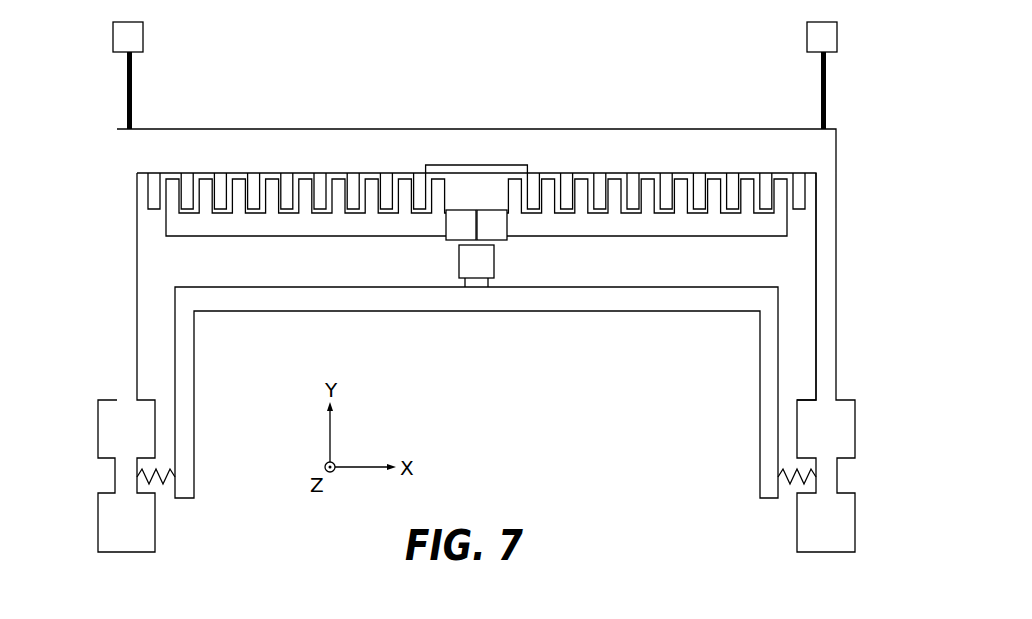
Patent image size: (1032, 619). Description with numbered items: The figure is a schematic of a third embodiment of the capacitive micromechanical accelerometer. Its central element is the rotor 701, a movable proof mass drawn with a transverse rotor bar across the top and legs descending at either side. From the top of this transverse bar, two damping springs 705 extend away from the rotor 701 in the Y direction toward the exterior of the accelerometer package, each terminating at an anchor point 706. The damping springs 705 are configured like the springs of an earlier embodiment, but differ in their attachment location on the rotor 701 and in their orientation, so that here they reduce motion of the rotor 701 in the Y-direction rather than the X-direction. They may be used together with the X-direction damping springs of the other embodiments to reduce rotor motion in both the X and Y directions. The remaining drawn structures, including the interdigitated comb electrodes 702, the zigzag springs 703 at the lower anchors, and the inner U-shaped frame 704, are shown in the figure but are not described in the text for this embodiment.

The rotor 701 is at (525, 128).
The fixed comb electrode 702 is at (170, 237).
The spring 703 is at (163, 487).
The support frame 704 is at (538, 313).
The damping springs 705 is at (135, 65).
The anchor points 706 is at (112, 33).